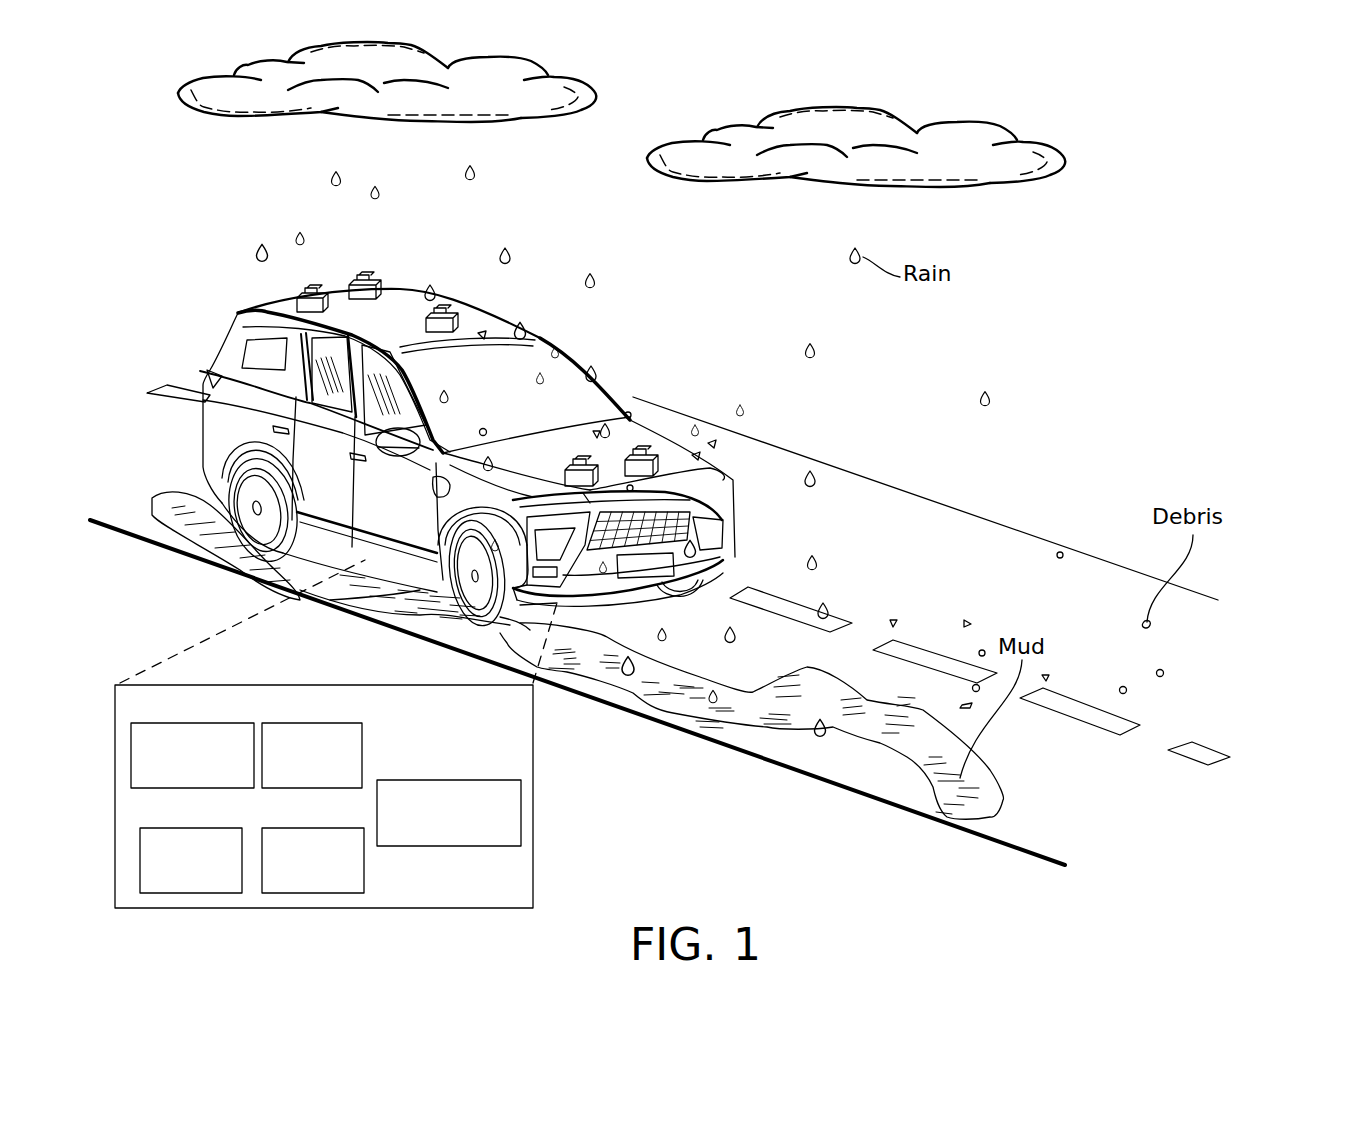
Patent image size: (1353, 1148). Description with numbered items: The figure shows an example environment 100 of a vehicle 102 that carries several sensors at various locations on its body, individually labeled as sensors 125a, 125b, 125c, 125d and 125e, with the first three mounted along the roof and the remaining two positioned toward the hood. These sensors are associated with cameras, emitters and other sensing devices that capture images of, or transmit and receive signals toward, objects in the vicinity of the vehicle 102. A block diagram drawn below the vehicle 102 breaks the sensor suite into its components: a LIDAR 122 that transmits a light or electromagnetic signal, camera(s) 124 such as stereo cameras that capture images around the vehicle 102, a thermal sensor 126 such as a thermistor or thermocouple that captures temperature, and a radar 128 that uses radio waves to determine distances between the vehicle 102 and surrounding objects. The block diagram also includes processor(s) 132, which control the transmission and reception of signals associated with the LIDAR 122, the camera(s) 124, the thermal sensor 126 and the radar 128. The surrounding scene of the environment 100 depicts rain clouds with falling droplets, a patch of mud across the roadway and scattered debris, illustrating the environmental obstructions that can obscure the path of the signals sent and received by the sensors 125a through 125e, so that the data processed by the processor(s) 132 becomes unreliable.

The environment 100 is at (1234, 88).
The vehicle 102 is at (220, 370).
The sensor 125a is at (305, 292).
The sensor 125b is at (365, 280).
The sensor 125c is at (447, 308).
The sensor 125d is at (582, 463).
The sensor 125e is at (641, 455).
The LIDAR 122 is at (315, 722).
The camera(s) 124 is at (172, 722).
The thermal sensor 126 is at (187, 828).
The radar 128 is at (319, 828).
The processor(s) 132 is at (462, 780).